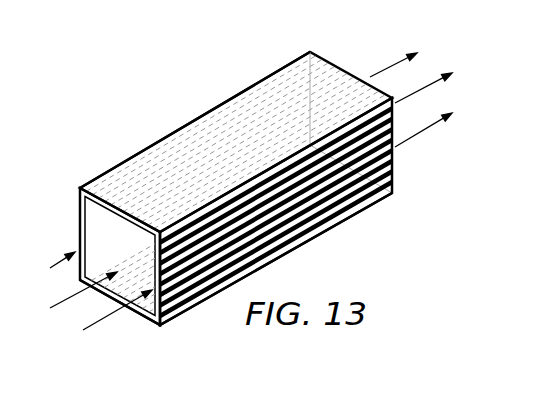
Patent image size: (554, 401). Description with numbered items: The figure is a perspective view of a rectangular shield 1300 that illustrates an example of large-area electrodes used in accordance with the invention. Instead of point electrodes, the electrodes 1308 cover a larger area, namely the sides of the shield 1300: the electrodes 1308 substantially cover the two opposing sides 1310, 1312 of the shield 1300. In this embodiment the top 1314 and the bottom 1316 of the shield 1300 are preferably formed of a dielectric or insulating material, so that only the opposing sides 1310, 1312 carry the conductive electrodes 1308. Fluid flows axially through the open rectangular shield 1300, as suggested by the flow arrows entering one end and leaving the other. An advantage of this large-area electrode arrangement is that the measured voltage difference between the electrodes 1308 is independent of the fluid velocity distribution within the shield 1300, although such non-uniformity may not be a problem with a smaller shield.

The shield 1300 is at (234, 192).
The electrodes 1308 is at (200, 127).
The opposing side 1310 is at (387, 167).
The opposing side 1312 is at (81, 226).
The top 1314 is at (327, 75).
The bottom 1316 is at (140, 315).